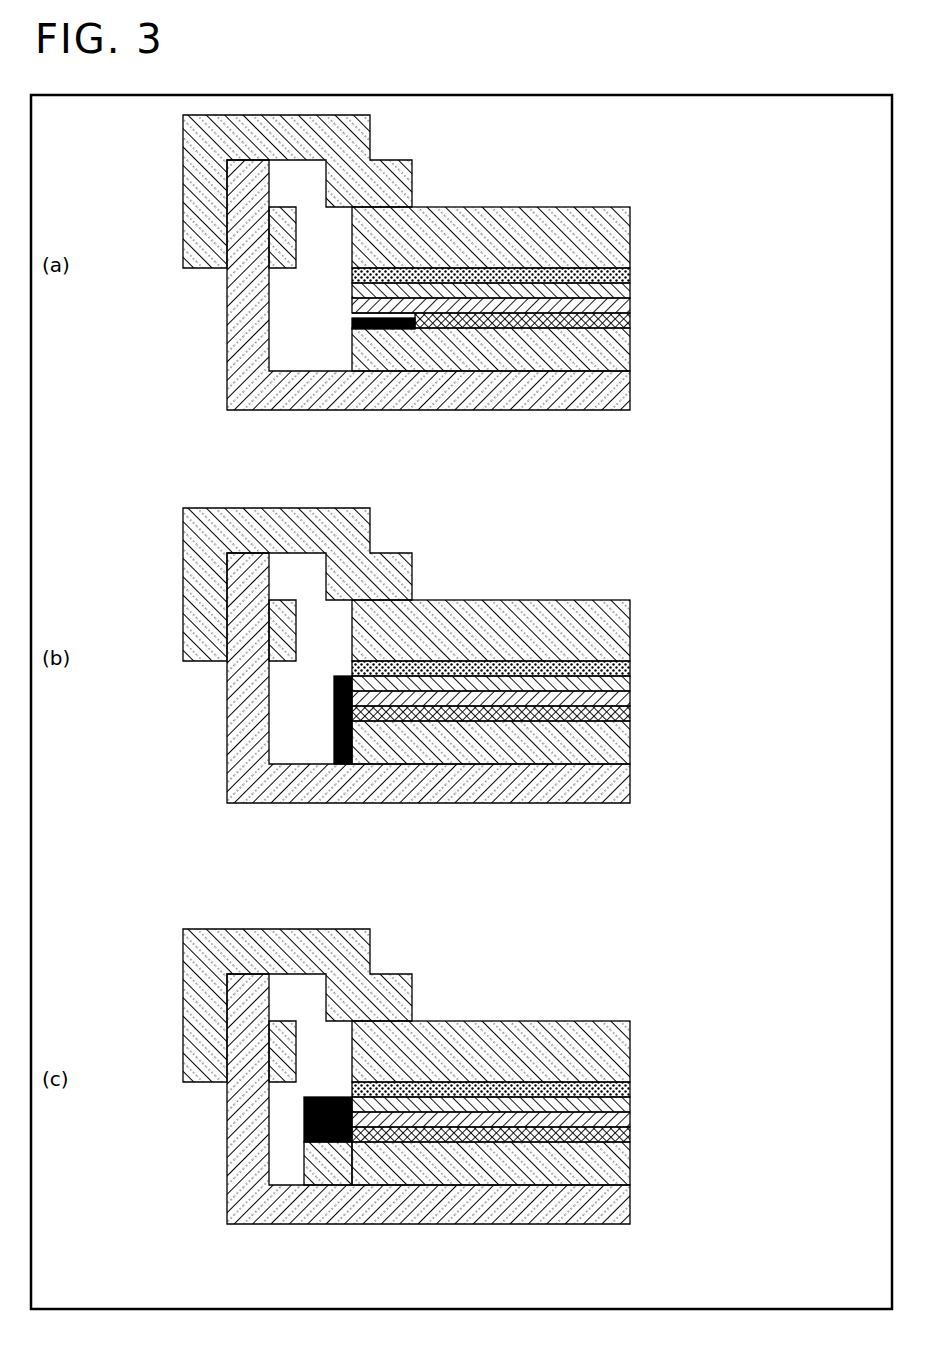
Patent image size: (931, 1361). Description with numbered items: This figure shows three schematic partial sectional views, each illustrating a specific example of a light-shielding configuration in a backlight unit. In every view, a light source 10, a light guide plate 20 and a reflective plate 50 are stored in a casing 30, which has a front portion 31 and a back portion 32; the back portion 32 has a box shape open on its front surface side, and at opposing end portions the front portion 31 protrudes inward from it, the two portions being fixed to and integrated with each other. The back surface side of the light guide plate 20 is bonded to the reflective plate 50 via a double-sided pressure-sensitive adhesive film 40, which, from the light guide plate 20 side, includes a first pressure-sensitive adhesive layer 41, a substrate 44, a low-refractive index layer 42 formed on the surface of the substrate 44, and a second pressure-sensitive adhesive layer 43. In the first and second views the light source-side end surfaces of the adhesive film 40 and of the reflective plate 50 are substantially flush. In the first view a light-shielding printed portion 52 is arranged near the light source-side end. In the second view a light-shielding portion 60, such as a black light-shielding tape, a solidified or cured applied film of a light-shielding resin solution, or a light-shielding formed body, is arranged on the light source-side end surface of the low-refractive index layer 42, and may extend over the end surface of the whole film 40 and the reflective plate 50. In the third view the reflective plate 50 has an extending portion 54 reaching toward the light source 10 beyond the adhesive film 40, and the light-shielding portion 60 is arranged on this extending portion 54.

The light source 10 is at (288, 253).
The light guide plate 20 is at (623, 238).
The casing 30 is at (348, 669).
The front portion 31 is at (183, 180).
The back portion 32 is at (227, 343).
The double-sided pressure-sensitive adhesive film 40 is at (548, 699).
The first pressure-sensitive adhesive layer 41 is at (625, 275).
The low-refractive index layer 42 is at (625, 304).
The second pressure-sensitive adhesive layer 43 is at (527, 733).
The substrate 44 is at (625, 291).
The reflective plate 50 is at (623, 352).
The light-shielding printed portion 52 is at (393, 330).
The extending portion 54 is at (330, 1165).
The light-shielding portion 60 is at (333, 728).